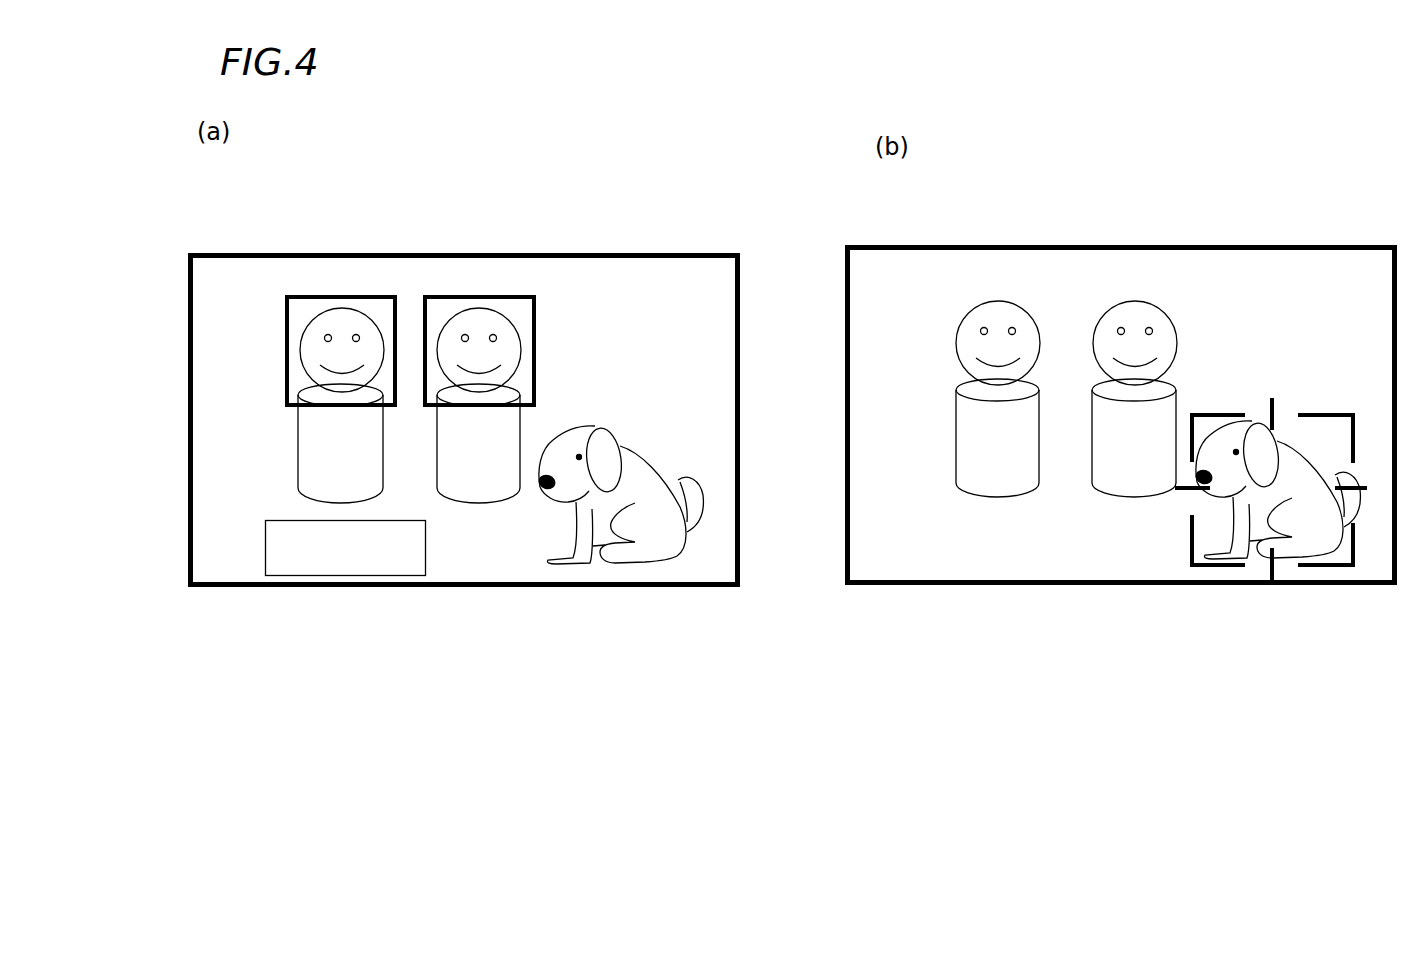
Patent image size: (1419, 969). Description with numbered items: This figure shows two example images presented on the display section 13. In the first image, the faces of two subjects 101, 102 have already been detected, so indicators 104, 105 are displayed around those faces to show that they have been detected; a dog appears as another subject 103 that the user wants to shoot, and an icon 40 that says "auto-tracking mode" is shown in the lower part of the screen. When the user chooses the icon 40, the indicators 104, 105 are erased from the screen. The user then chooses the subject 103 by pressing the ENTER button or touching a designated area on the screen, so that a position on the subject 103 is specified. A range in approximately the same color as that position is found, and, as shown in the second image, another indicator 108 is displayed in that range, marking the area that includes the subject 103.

The display section 13 is at (463, 588).
The icon 40 is at (297, 576).
The subject 101 is at (313, 320).
The subject 102 is at (510, 322).
The subject 103 is at (620, 568).
The indicator 104 is at (284, 353).
The indicator 105 is at (537, 351).
The indicator 108 is at (1190, 514).